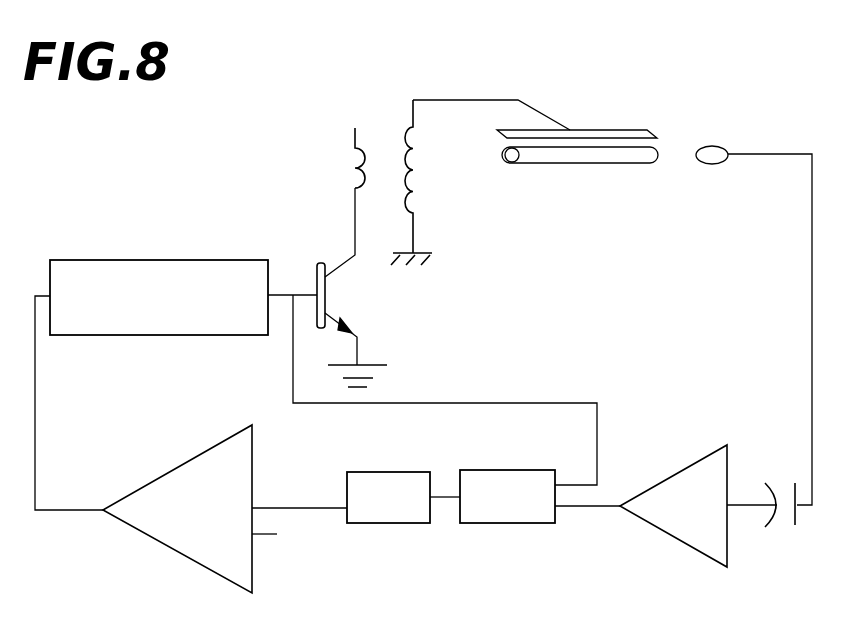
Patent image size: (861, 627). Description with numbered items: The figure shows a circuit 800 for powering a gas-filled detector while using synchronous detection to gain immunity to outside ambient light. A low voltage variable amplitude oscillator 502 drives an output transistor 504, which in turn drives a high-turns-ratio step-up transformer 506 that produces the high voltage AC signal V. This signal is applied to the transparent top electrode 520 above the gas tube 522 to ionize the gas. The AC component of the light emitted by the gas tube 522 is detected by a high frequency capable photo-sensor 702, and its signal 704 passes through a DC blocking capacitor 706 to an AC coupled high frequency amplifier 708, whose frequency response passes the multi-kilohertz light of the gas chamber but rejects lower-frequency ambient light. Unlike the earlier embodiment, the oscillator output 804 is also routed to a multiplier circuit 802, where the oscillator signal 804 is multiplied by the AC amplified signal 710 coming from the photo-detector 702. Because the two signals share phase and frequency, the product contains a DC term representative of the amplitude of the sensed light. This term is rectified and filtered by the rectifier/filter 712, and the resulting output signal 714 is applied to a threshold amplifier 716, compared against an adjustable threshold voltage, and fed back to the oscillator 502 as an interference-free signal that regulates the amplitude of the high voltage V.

The circuit 800 is at (206, 131).
The variable amplitude oscillator 502 is at (157, 260).
The output transistor 504 is at (317, 263).
The step-up transformer 506 is at (387, 147).
The top electrode 520 is at (595, 130).
The gas tube 522 is at (587, 163).
The photo-sensor 702 is at (707, 146).
The signal 704 is at (812, 302).
The DC blocking capacitor 706 is at (797, 484).
The AC coupled high frequency amplifier 708 is at (667, 477).
The amplified signal 710 is at (590, 507).
The rectifier/filter 712 is at (372, 472).
The rectified and filtered output signal 714 is at (295, 507).
The threshold amplifier 716 is at (160, 472).
The multiplier circuit 802 is at (492, 470).
The oscillator output 804 is at (417, 402).